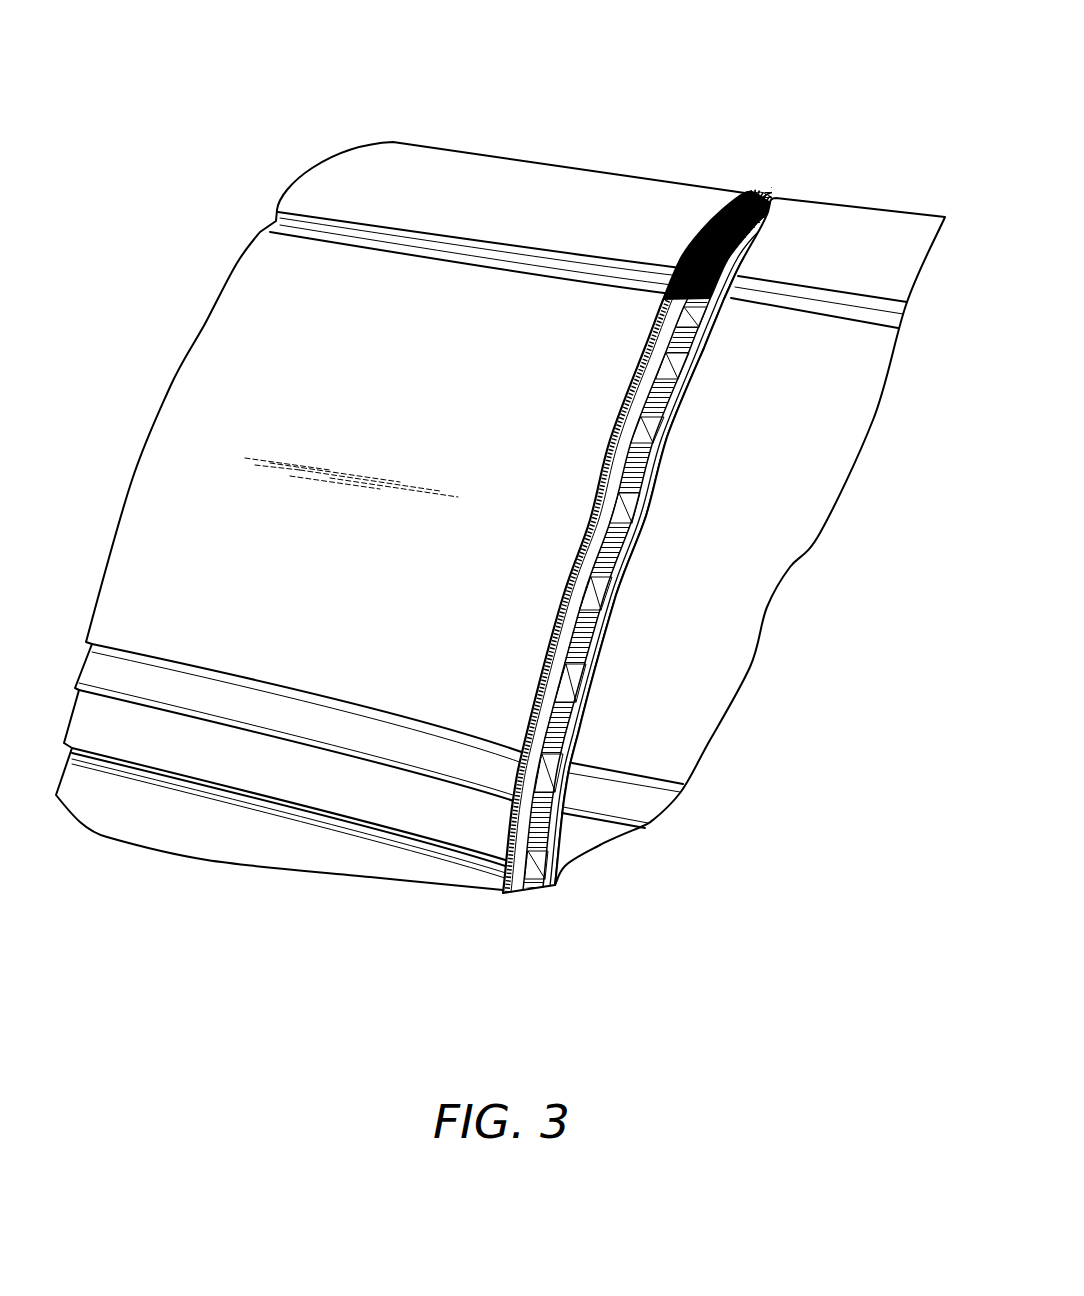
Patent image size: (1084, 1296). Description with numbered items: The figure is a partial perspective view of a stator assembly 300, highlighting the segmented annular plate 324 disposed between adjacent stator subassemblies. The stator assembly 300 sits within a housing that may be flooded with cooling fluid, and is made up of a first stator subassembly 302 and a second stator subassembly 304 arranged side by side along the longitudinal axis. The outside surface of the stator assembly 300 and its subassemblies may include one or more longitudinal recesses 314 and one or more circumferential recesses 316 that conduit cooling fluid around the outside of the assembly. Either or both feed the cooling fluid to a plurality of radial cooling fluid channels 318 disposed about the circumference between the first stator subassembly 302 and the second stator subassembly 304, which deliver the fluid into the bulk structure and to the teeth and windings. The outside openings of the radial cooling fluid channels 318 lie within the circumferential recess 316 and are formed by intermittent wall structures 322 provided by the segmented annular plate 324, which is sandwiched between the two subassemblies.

The stator assembly 300 is at (778, 134).
The first stator subassembly 302 is at (876, 189).
The second stator subassembly 304 is at (591, 140).
The longitudinal recess 314 is at (623, 834).
The circumferential recess 316 is at (587, 784).
The radial cooling fluid channel 318 is at (568, 795).
The intermittent wall structure 322 is at (517, 839).
The segmented annular plate 324 is at (531, 882).